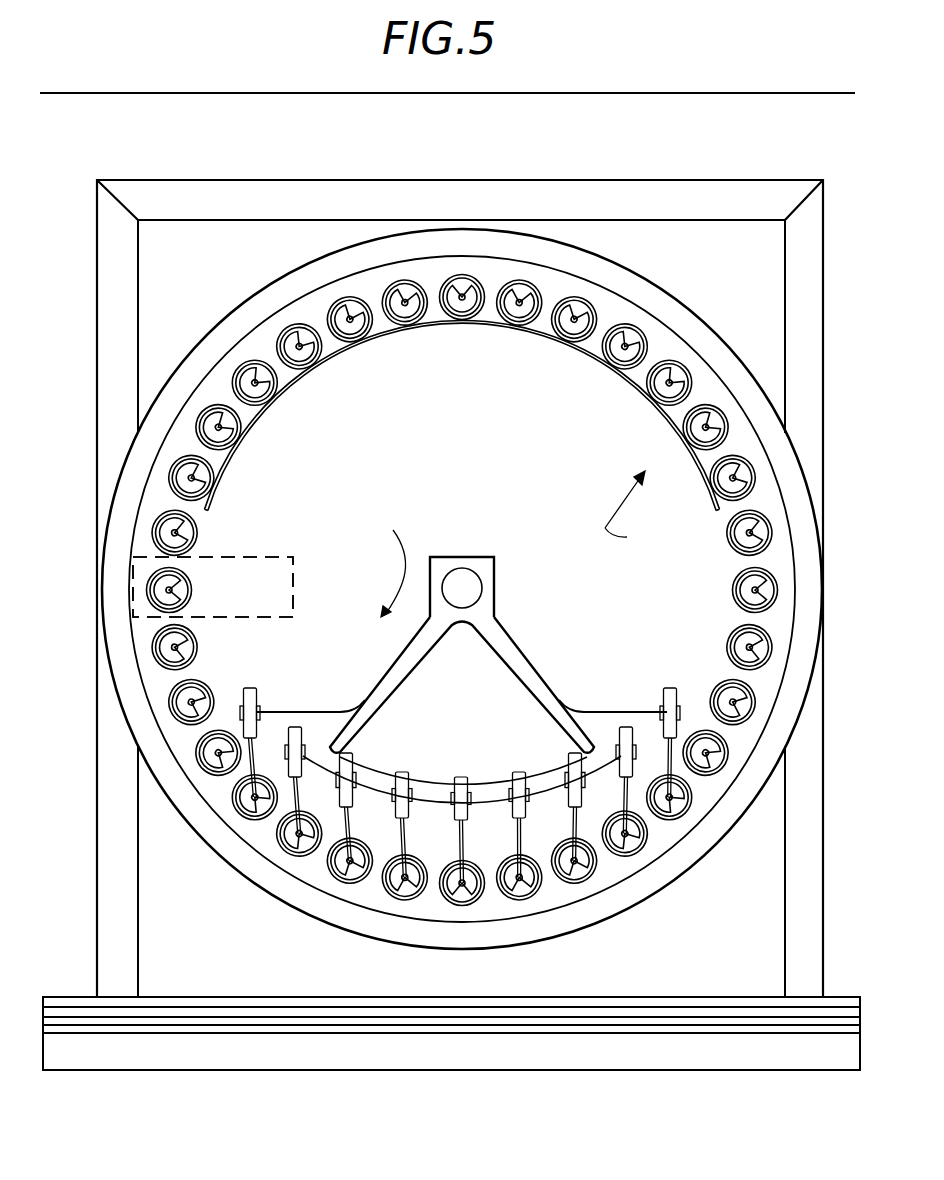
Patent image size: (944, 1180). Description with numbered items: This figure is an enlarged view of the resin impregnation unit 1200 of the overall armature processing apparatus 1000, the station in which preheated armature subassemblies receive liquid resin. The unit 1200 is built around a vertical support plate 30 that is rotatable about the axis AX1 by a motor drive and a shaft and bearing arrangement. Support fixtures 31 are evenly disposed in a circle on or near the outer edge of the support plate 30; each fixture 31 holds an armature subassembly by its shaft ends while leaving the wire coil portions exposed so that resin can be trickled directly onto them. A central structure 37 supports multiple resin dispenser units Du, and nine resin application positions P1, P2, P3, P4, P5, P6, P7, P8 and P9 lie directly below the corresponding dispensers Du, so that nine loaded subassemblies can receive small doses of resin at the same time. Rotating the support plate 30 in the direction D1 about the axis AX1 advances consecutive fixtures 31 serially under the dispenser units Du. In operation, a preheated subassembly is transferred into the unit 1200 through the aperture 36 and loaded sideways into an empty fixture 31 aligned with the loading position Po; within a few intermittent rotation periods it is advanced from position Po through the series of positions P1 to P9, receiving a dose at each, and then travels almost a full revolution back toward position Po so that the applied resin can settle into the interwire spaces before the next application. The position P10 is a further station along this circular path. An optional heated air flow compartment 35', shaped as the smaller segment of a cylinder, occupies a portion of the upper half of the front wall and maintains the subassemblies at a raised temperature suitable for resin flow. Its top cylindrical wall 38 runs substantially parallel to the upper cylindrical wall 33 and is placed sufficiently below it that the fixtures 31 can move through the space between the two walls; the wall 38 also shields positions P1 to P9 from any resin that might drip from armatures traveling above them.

The sorting machine 1000 is at (218, 78).
The resin impregnation unit 1200 is at (626, 178).
The vertical support plate 30 is at (687, 355).
The support fixture 31 is at (163, 720).
The upper cylindrical wall 33 is at (238, 318).
The heated air flow compartment 35' is at (462, 518).
The aperture 36 is at (294, 556).
The central structure 37 is at (530, 662).
The top cylindrical wall 38 is at (276, 393).
The axis AX1 is at (467, 583).
The direction D1 is at (402, 558).
The loading position Po is at (191, 577).
The dispenser unit Du is at (251, 689).
The resin application position P1 is at (205, 773).
The resin application position P2 is at (249, 815).
The resin application position P3 is at (288, 857).
The resin application position P4 is at (331, 880).
The resin application position P5 is at (392, 908).
The resin application position P6 is at (455, 905).
The resin application position P7 is at (529, 903).
The resin application position P8 is at (585, 880).
The resin application position P9 is at (643, 840).
The position 10 P10 is at (683, 807).